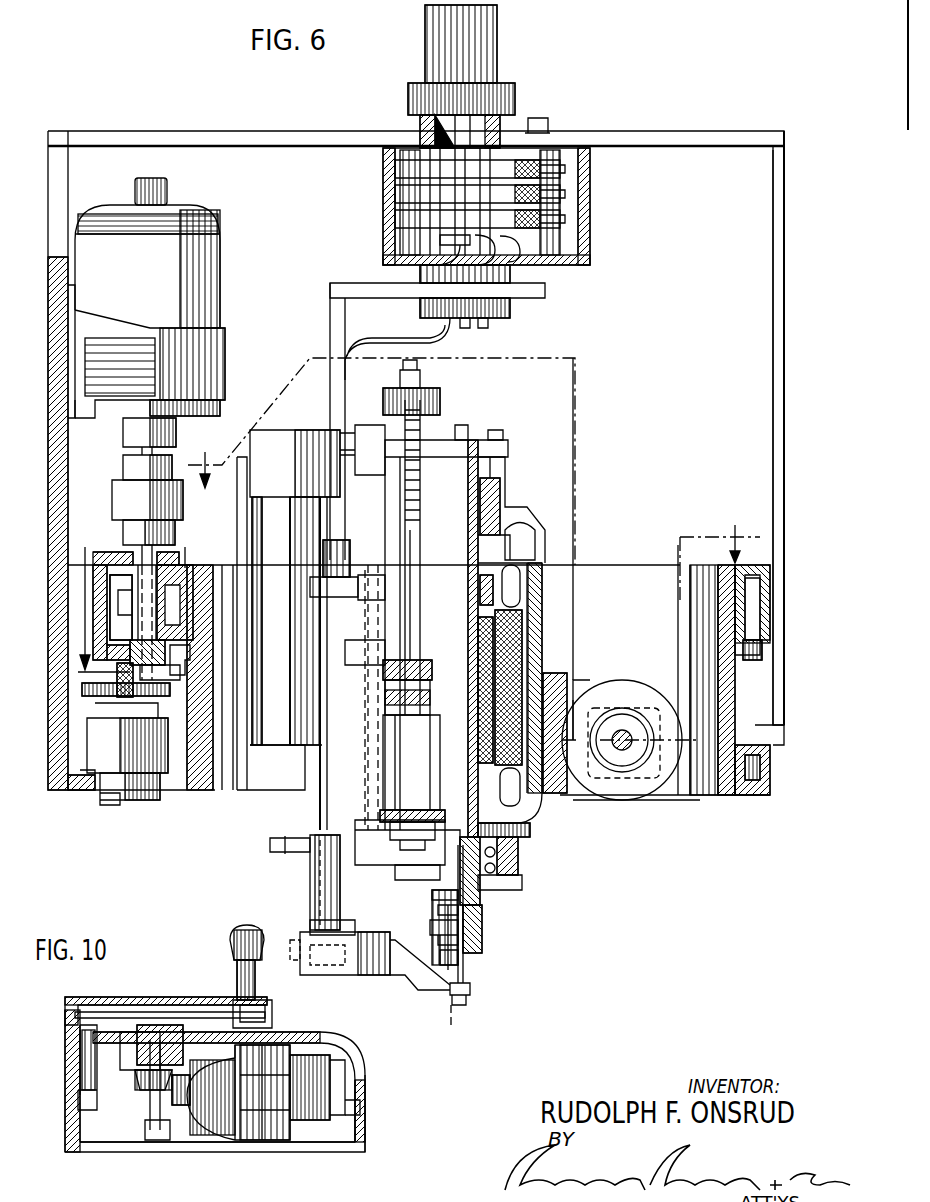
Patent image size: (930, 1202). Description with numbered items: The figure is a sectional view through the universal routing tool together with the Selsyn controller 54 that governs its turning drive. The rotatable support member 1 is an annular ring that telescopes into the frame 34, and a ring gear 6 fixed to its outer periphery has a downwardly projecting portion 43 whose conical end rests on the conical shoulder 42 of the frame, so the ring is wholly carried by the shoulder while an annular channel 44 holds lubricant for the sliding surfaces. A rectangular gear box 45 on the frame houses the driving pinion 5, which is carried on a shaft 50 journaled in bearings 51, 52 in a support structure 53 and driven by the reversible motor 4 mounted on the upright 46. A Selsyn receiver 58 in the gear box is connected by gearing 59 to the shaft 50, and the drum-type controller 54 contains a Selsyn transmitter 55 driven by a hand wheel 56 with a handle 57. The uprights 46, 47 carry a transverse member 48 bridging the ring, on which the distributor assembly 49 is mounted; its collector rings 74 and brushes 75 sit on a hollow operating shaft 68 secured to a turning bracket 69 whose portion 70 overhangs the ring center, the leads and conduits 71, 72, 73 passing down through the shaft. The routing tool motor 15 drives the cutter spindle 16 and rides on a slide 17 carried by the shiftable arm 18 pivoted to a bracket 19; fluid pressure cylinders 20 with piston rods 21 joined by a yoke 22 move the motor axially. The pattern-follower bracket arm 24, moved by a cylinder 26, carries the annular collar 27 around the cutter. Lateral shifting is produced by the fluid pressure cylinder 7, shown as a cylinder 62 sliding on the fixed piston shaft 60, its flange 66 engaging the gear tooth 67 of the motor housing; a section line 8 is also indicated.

In FIG. 6, the rotatable support member 1 is at (715, 585).
In FIG. 6, the reversible motor 4 is at (142, 300).
In FIG. 6, the driving pinion 5 is at (125, 624).
In FIG. 6, the ring gear 6 is at (760, 590).
In FIG. 6, the fluid pressure cylinder 7 is at (436, 479).
In FIG. 6, the section line 8- 8 is at (133, 599).
In FIG. 6, the motor 15 is at (530, 830).
In FIG. 6, the cutter spindle 16 is at (470, 968).
In FIG. 6, the slide 17 is at (376, 860).
In FIG. 6, the tool carrier or shiftable arm 18 is at (367, 575).
In FIG. 6, the bracket 19 is at (262, 775).
In FIG. 6, the fluid pressure cylinders 20 is at (424, 770).
In FIG. 6, the piston rods 21 is at (413, 592).
In FIG. 6, the yoke 22 is at (440, 405).
In FIG. 6, the bracket arm 24 is at (385, 965).
In FIG. 6, the fluid pressure actuating cylinder 26 is at (316, 887).
In FIG. 6, the annular collar 27 is at (470, 997).
In FIG. 6, the frame 34 is at (198, 790).
In FIG. 6, the shoulder 42 is at (725, 650).
In FIG. 6, the downwardly projecting portion 43 is at (762, 620).
In FIG. 6, the annular channel 44 is at (763, 650).
In FIG. 6, the gear box 45 is at (75, 722).
In FIG. 6, the upright 46 is at (58, 456).
In FIG. 6, the upright 47 is at (772, 408).
In FIG. 6, the transverse member 48 is at (652, 137).
In FIG. 6, the distributor assembly 49 is at (545, 82).
In FIG. 6, the shaft 50 is at (93, 572).
In FIG. 6, the bearing 51 is at (110, 592).
In FIG. 6, the bearing 52 is at (95, 680).
In FIG. 6, the support structure 53 is at (93, 658).
In FIG. 10, the drum-type controller 54 is at (368, 1080).
In FIG. 10, the Selsyn generator or transmitter 55 is at (235, 1135).
In FIG. 10, the hand wheel 56 is at (190, 1000).
In FIG. 10, the handle 57 is at (228, 943).
In FIG. 6, the Selsyn receiver 58 is at (128, 765).
In FIG. 6, the gearing 59 is at (66, 697).
In FIG. 6, the fixed piston shaft 60 is at (620, 730).
In FIG. 6, the cylinder 62 is at (640, 708).
In FIG. 6, the rib or flange 66 is at (640, 800).
In FIG. 6, the gear tooth 67 is at (565, 672).
In FIG. 6, the operating shaft 68 is at (438, 243).
In FIG. 6, the turning bracket 69 is at (330, 316).
In FIG. 6, the portion 70 is at (528, 298).
In FIG. 6, the lead or conduit 71 is at (440, 343).
In FIG. 6, the lead 72 is at (466, 328).
In FIG. 6, the lead or conduit 73 is at (493, 318).
In FIG. 6, the collector rings 74 is at (392, 215).
In FIG. 6, the brushes 75 is at (565, 220).